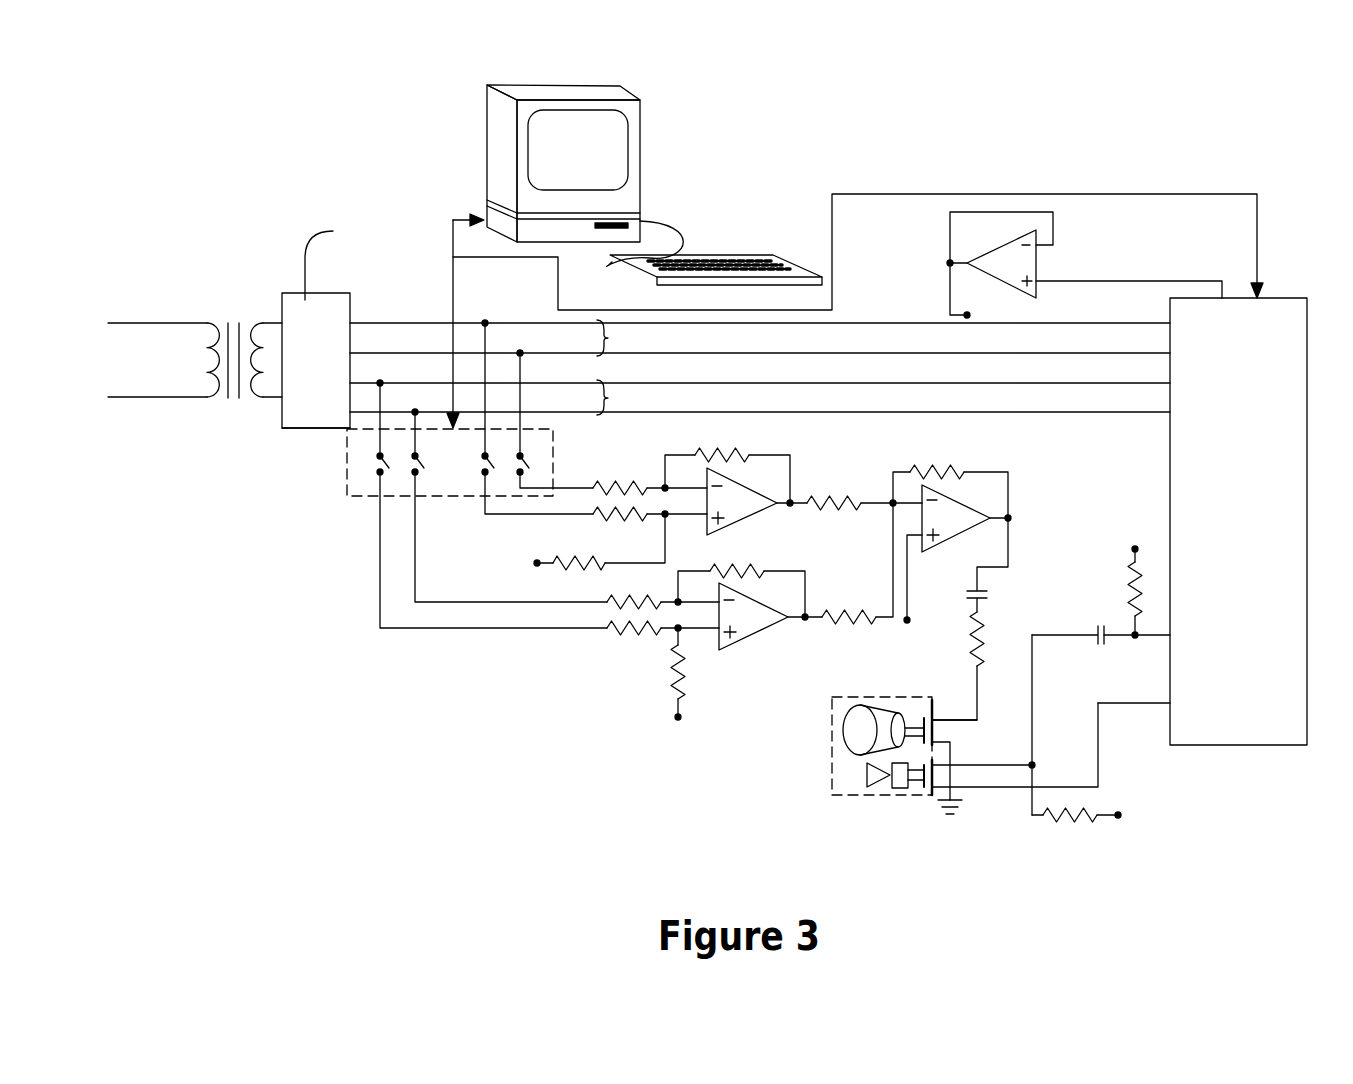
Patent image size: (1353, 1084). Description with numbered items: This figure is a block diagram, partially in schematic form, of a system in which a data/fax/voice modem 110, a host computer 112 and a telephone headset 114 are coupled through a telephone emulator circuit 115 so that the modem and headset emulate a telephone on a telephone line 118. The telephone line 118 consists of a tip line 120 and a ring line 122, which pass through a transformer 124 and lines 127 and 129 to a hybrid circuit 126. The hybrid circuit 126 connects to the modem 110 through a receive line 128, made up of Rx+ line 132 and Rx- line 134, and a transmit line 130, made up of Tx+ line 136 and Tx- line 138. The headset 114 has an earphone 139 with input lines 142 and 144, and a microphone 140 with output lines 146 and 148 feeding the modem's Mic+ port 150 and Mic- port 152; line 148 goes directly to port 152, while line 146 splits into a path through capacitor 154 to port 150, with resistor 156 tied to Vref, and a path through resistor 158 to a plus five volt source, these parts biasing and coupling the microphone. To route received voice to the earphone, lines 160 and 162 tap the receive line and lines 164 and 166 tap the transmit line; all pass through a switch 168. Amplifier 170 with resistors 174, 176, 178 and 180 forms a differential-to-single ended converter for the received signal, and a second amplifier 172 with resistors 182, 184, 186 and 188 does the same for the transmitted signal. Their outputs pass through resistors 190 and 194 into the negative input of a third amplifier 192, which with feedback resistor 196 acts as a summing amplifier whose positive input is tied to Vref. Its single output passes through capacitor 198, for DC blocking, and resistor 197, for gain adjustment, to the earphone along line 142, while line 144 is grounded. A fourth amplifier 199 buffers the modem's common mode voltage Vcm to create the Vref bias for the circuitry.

The data/fax/voice modem 110 is at (1293, 298).
The host computer 112 is at (643, 222).
The telephone headset 114 is at (846, 697).
The telephone emulator circuit 115 is at (468, 745).
The telephone line 118 is at (150, 258).
The tip line 120 is at (148, 322).
The ring line 122 is at (110, 397).
The transformer 124 is at (239, 398).
The hybrid circuit 126 is at (312, 300).
The line 127 is at (262, 320).
The receive line 128 is at (626, 338).
The line 129 is at (283, 428).
The transmit line 130 is at (626, 397).
The Rx+ line 132 is at (855, 323).
The Rx- line 134 is at (806, 353).
The Tx+ line 136 is at (747, 383).
The Tx- line 138 is at (694, 412).
The earphone 139 is at (863, 706).
The microphone 140 is at (867, 775).
The input line 142 is at (966, 718).
The input line 144 is at (952, 744).
The output line 146 is at (1032, 760).
The output line 148 is at (1088, 785).
The Mic+ port 150 is at (1170, 634).
The Mic- port 152 is at (1170, 702).
The capacitor 154 is at (1097, 645).
The resistor 156 is at (1133, 600).
The resistor 158 is at (1116, 812).
The line 160 is at (488, 392).
The line 162 is at (521, 392).
The line 164 is at (384, 402).
The line 166 is at (418, 411).
The switch 168 is at (348, 493).
The amplifier 170 is at (731, 496).
The second amplifier 172 is at (744, 608).
The resistor 174 is at (597, 486).
The resistor 176 is at (598, 516).
The resistor 178 is at (580, 560).
The resistor 180 is at (740, 455).
The resistor 182 is at (612, 600).
The resistor 184 is at (612, 633).
The resistor 186 is at (755, 570).
The resistor 188 is at (689, 670).
The resistor 190 is at (820, 500).
The third amplifier 192 is at (952, 511).
The resistor 194 is at (828, 614).
The resistor 196 is at (945, 470).
The resistor 197 is at (975, 616).
The capacitor 198 is at (989, 597).
The fourth amplifier 199 is at (979, 265).